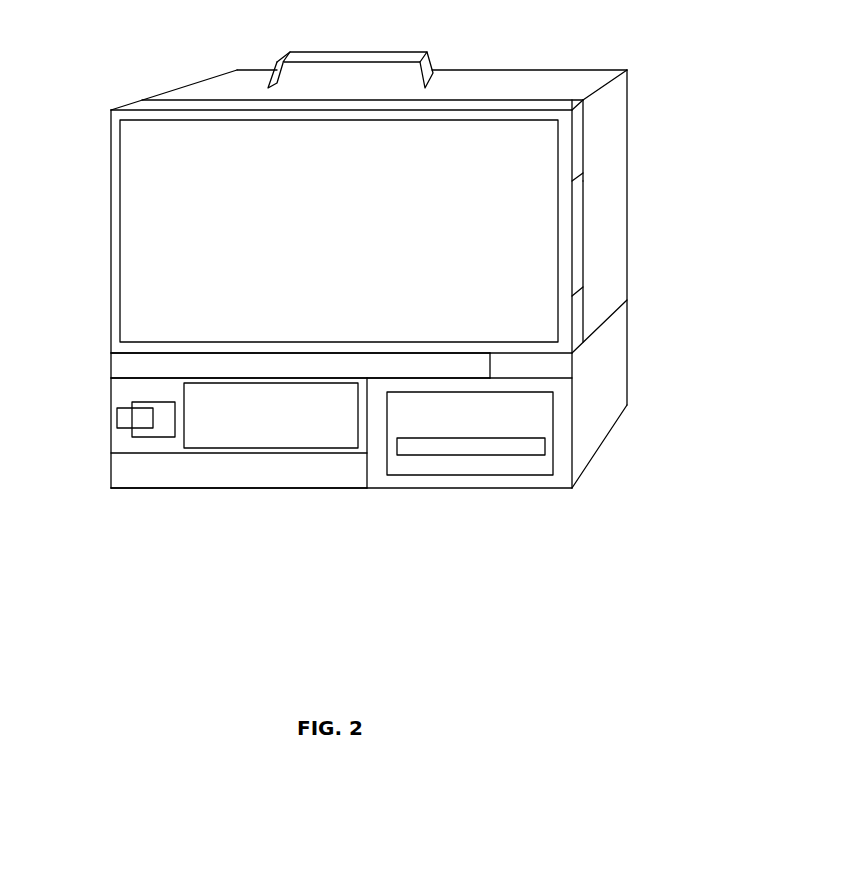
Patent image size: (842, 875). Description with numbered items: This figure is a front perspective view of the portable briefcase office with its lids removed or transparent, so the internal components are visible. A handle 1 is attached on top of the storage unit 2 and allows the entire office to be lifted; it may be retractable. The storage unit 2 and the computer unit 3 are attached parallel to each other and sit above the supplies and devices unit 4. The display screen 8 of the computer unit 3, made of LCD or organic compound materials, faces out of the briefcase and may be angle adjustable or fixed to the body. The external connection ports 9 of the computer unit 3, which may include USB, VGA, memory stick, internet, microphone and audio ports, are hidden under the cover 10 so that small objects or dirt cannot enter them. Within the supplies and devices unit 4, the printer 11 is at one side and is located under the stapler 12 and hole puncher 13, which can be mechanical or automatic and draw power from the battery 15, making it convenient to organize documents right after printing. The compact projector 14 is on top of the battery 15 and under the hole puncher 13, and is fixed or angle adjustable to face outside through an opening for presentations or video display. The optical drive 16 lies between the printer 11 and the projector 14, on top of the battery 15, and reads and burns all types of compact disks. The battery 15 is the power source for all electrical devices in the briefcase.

The handle 1 is at (367, 55).
The storage unit 2 is at (602, 127).
The computer unit 3 is at (150, 108).
The supplies and devices unit 4 is at (612, 342).
The display screen 8 is at (157, 192).
The external connection ports 9 is at (577, 247).
The cover 10 is at (578, 202).
The printer 11 is at (532, 413).
The stapler 12 is at (553, 367).
The hole puncher 13 is at (135, 368).
The projector 14 is at (123, 433).
The battery 15 is at (170, 470).
The optical drive 16 is at (290, 427).